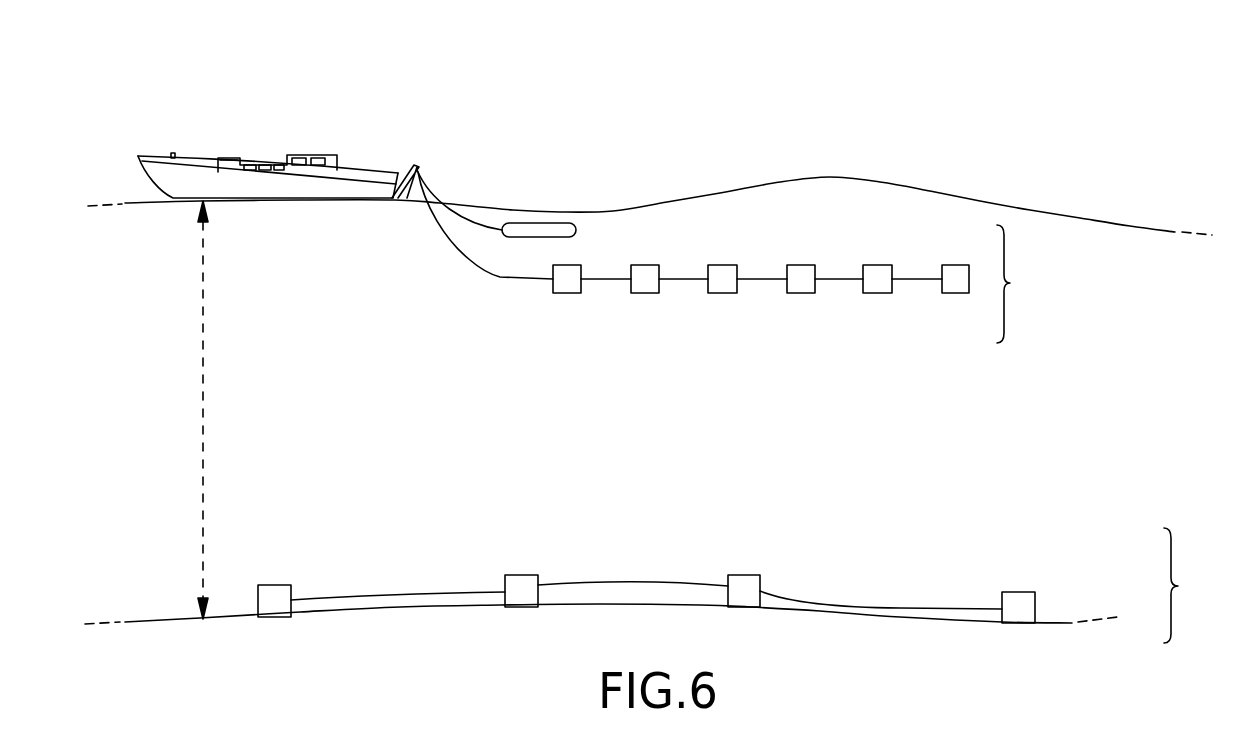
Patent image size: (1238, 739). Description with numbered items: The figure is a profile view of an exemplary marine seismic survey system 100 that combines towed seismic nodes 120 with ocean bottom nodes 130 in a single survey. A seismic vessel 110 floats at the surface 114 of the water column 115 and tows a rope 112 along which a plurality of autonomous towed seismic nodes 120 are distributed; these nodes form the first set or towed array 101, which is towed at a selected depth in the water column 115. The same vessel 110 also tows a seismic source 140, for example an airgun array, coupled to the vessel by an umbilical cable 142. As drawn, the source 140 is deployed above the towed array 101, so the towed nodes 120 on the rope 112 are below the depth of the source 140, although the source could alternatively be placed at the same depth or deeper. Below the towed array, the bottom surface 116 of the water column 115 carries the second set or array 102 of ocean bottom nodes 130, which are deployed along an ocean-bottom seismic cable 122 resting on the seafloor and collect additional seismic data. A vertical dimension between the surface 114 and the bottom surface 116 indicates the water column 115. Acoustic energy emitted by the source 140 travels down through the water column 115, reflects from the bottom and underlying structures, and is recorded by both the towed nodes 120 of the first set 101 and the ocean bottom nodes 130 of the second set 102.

The marine seismic survey system 100 is at (915, 103).
The first set of seismic nodes 101 is at (1022, 284).
The second set of seismic nodes 102 is at (1193, 585).
The seismic vessel 110 is at (357, 168).
The rope 112 is at (450, 252).
The surface of water column 114 is at (1030, 210).
The water column 115 is at (203, 415).
The bottom surface 116 is at (165, 619).
The towed seismic nodes 120 is at (553, 283).
The ocean-bottom seismic cable 122 is at (388, 592).
The ocean bottom nodes 130 is at (278, 590).
The seismic source 140 is at (541, 222).
The umbilical cable 142 is at (458, 218).